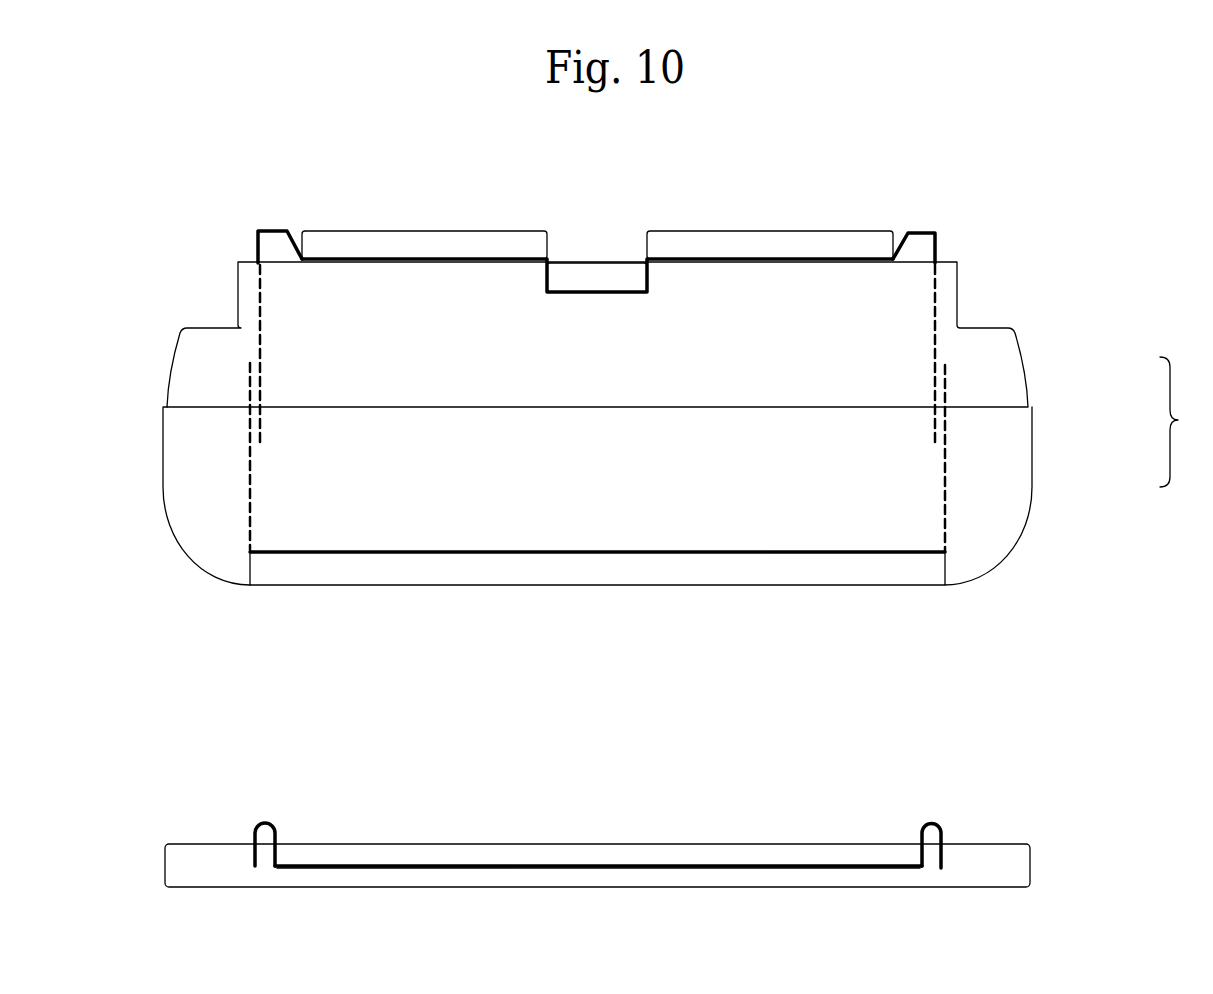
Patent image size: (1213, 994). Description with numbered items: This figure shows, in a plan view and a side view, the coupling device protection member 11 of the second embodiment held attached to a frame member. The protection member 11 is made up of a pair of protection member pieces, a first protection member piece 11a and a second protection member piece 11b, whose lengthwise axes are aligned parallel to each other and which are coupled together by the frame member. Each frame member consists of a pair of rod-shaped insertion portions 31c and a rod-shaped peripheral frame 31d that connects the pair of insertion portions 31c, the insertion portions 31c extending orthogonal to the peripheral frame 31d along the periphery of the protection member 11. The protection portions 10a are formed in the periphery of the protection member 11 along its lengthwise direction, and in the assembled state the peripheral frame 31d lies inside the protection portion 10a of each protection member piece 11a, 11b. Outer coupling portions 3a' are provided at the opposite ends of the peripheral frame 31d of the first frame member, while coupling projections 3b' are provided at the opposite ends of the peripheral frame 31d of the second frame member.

The protection portion 10a is at (430, 242).
The protection member 11 is at (1185, 422).
The first protection member piece 11a is at (1023, 367).
The second protection member piece 11b is at (1032, 473).
The insertion portion 31c is at (261, 335).
The peripheral frame 31d is at (508, 258).
The outer coupling portion 3a' is at (597, 202).
The coupling projection 3b' is at (598, 813).